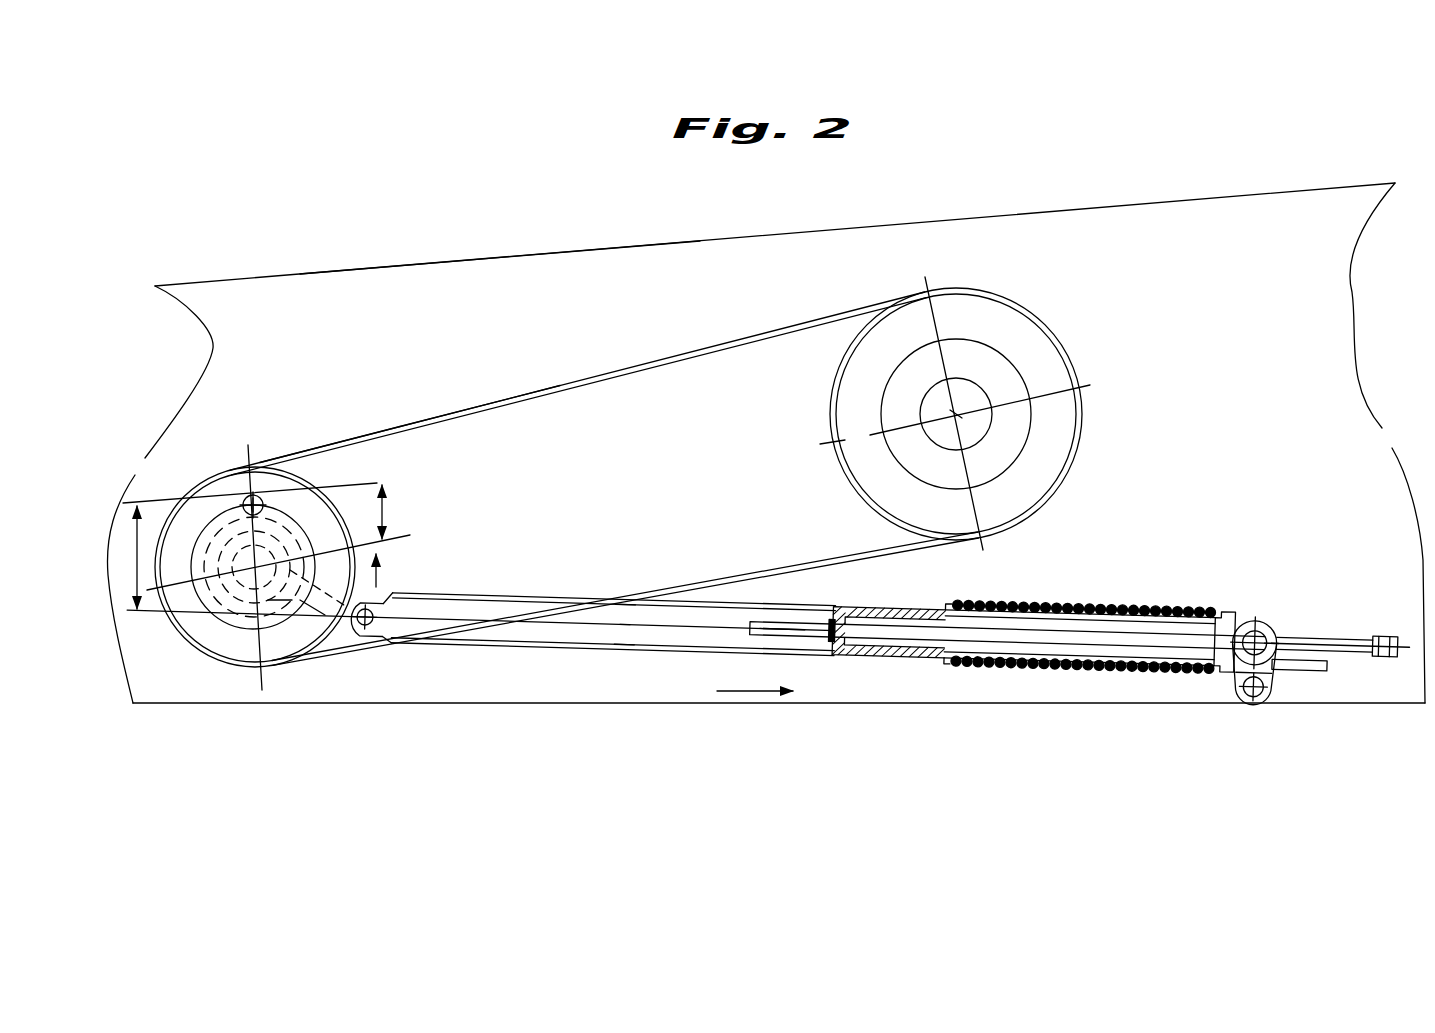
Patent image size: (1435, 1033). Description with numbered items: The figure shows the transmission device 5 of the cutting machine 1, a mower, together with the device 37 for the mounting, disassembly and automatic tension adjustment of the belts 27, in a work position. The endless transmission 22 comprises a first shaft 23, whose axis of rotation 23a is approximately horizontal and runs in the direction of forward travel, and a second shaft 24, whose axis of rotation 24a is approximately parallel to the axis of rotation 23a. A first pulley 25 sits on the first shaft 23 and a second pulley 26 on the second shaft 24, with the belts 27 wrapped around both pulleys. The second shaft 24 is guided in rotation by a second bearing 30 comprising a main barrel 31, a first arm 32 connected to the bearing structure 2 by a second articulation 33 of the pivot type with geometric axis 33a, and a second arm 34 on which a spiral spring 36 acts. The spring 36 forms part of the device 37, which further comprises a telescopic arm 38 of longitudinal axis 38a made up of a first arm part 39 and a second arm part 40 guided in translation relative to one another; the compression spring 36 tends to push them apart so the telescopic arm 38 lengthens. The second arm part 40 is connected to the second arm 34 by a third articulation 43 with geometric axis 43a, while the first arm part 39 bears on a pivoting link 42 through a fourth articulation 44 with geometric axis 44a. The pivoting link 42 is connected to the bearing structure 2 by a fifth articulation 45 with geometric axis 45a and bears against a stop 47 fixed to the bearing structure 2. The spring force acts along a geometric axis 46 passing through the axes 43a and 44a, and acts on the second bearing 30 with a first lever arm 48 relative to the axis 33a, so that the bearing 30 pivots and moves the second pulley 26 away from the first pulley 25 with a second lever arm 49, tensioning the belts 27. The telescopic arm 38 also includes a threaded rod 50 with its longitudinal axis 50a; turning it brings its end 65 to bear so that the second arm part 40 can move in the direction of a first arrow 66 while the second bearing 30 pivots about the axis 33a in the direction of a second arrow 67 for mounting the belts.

The cutting machine 1 is at (1162, 193).
The bearing structure 2 is at (360, 265).
The transmission device 5 is at (624, 364).
The endless transmission 22 is at (466, 406).
The first shaft 23 is at (962, 398).
The axis of rotation 23a is at (958, 420).
The second shaft 24 is at (242, 582).
The axis of rotation 24a is at (250, 588).
The first pulley 25 is at (970, 302).
The second pulley 26 is at (212, 496).
The belts 27 is at (392, 432).
The second bearing 30 is at (330, 600).
The main barrel 31 is at (278, 600).
The first arm 32 is at (268, 494).
The second articulation 33 is at (250, 494).
The geometric axis 33a is at (257, 494).
The second arm 34 is at (314, 608).
The spiral spring 36 is at (1021, 668).
The device for the mounting/disassembly and automatic tension adjustment of the belt 37 is at (912, 660).
The telescopic arm 38 is at (829, 660).
The longitudinal axis 38a is at (625, 623).
The first arm part 39 is at (1238, 604).
The second arm part 40 is at (698, 652).
The pivoting link 42 is at (1270, 667).
The third articulation 43 is at (390, 599).
The geometric axis 43a is at (368, 621).
The fourth articulation 44 is at (1264, 636).
The geometric axis 44a is at (1253, 642).
The fifth articulation 45 is at (1263, 694).
The geometric axis 45a is at (1255, 686).
The geometric axis 46 is at (625, 623).
The stop 47 is at (1331, 667).
The first lever arm 48 is at (137, 550).
The second lever arm 49 is at (384, 511).
The threaded rod 50 is at (1318, 633).
The rod shoulder 50a is at (625, 623).
The end 65 is at (1389, 630).
The first arrow 66 is at (747, 691).
The second arrow 67 is at (376, 587).